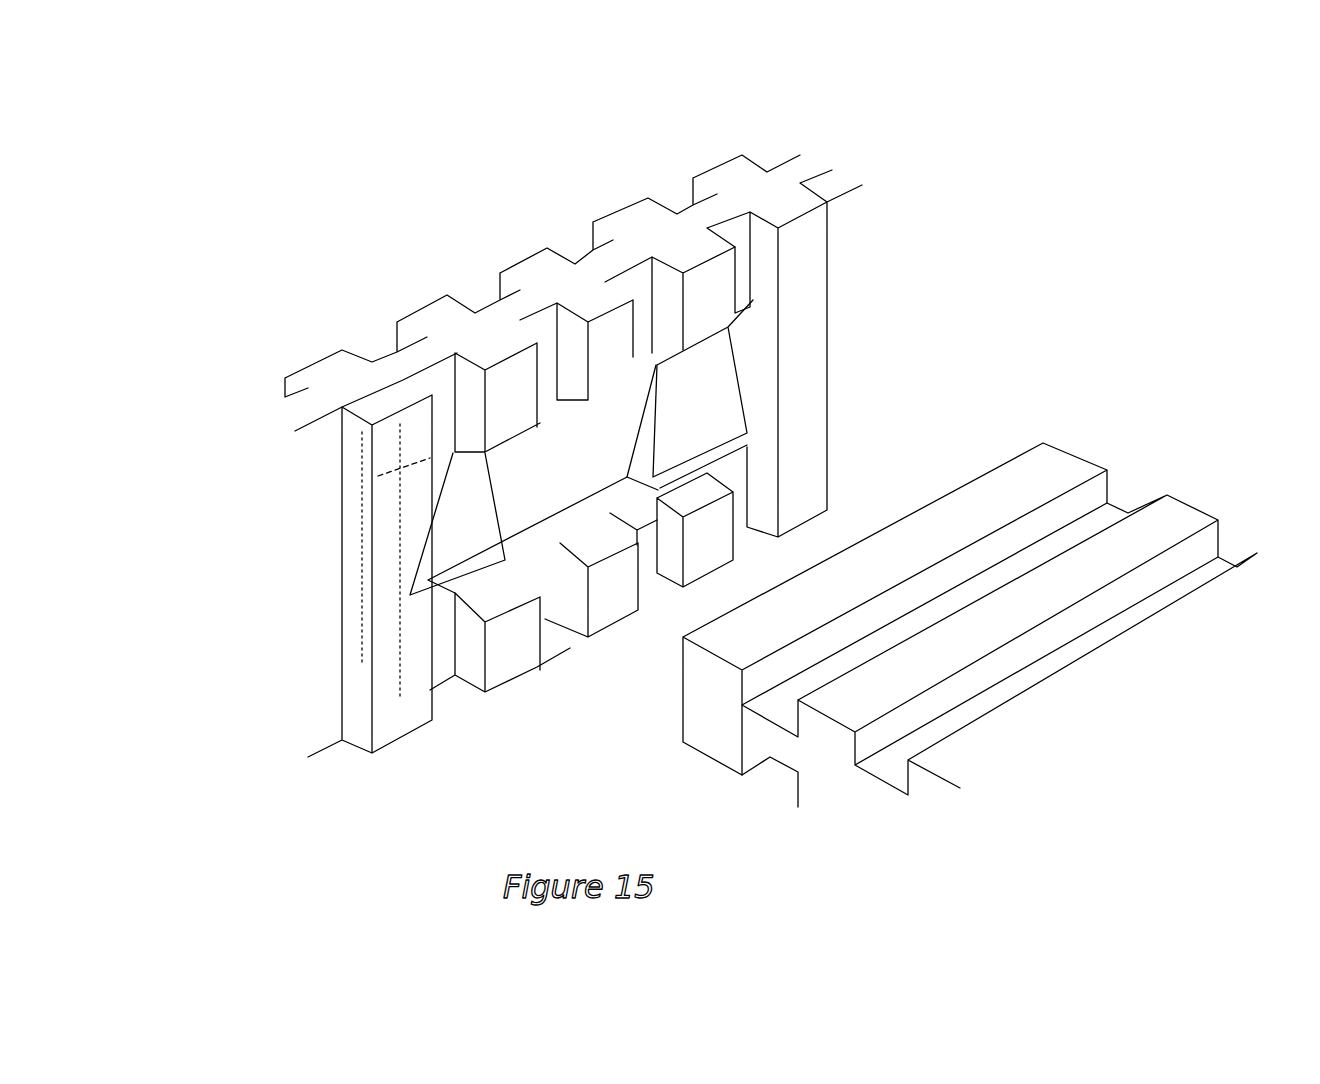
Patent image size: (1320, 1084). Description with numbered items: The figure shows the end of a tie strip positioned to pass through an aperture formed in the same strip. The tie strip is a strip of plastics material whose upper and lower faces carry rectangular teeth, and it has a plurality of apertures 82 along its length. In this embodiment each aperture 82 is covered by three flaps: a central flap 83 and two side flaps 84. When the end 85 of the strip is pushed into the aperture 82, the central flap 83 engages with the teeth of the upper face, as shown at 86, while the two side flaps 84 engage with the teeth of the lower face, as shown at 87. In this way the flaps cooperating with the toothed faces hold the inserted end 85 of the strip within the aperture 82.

The aperture 82 is at (755, 357).
The central flap 83 is at (565, 452).
The side flaps 84 is at (713, 400).
The end of the strip 85 is at (888, 522).
The engagement of central flap with upper face teeth 86 is at (1112, 425).
The engagement of side flaps with lower face teeth 87 is at (759, 807).